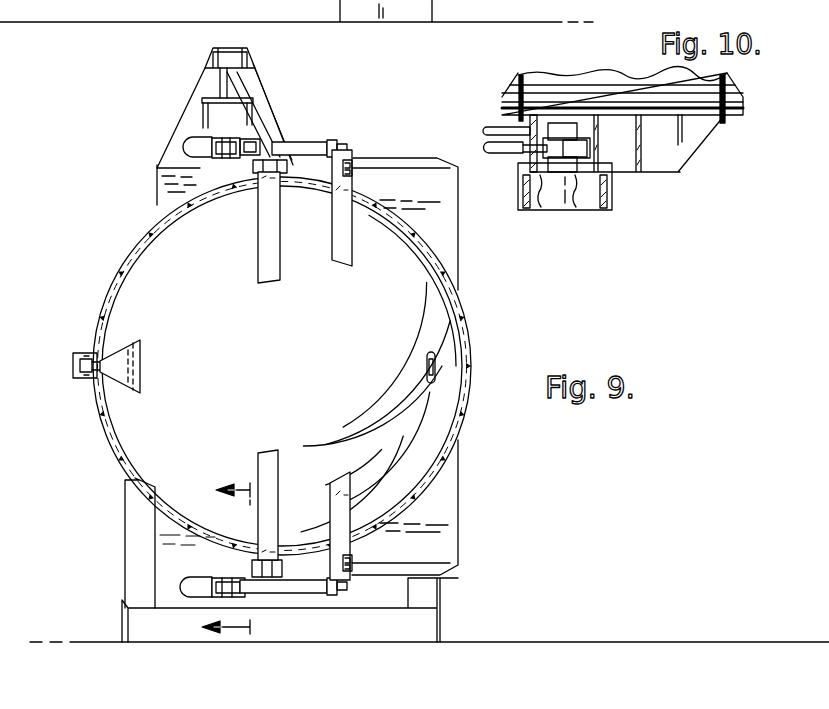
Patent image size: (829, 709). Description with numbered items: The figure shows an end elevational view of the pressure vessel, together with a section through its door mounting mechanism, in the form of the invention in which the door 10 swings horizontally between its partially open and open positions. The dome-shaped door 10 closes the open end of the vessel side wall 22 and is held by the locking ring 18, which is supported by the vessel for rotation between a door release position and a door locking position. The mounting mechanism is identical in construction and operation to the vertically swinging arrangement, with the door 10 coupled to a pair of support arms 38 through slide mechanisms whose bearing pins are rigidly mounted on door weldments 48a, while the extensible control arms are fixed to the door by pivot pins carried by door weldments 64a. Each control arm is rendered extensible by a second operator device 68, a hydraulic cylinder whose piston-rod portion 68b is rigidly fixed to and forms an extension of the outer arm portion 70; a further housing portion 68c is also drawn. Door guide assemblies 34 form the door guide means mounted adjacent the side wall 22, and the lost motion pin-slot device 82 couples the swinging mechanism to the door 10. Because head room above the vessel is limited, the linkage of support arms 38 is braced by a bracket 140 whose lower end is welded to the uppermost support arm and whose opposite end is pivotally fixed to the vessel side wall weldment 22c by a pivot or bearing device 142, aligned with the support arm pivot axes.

In FIG. 9, the door 10 is at (293, 345).
In FIG. 9, the locking ring 18 is at (462, 273).
In FIG. 10, the side wall 22 is at (678, 168).
In FIG. 9, the vessel side wall weldment 22c is at (187, 117).
In FIG. 9, the door guide assembly 34 is at (358, 153).
In FIG. 9, the support arm 38 is at (243, 185).
In FIG. 10, the support arm 38 is at (493, 127).
In FIG. 9, the door weldment 48a is at (267, 258).
In FIG. 9, the door weldment 64a is at (338, 233).
In FIG. 9, the second operator device 68 is at (214, 164).
In FIG. 10, the piston-rod portion 68b is at (541, 186).
In FIG. 10, the actuator housing side 68c is at (578, 195).
In FIG. 9, the outer arm portion 70 is at (310, 145).
In FIG. 10, the outer arm portion 70 is at (487, 153).
In FIG. 9, the lost motion pin-slot device 82 is at (82, 350).
In FIG. 9, the bracket 140 is at (258, 128).
In FIG. 9, the pivot and/or bearing device 142 is at (217, 82).